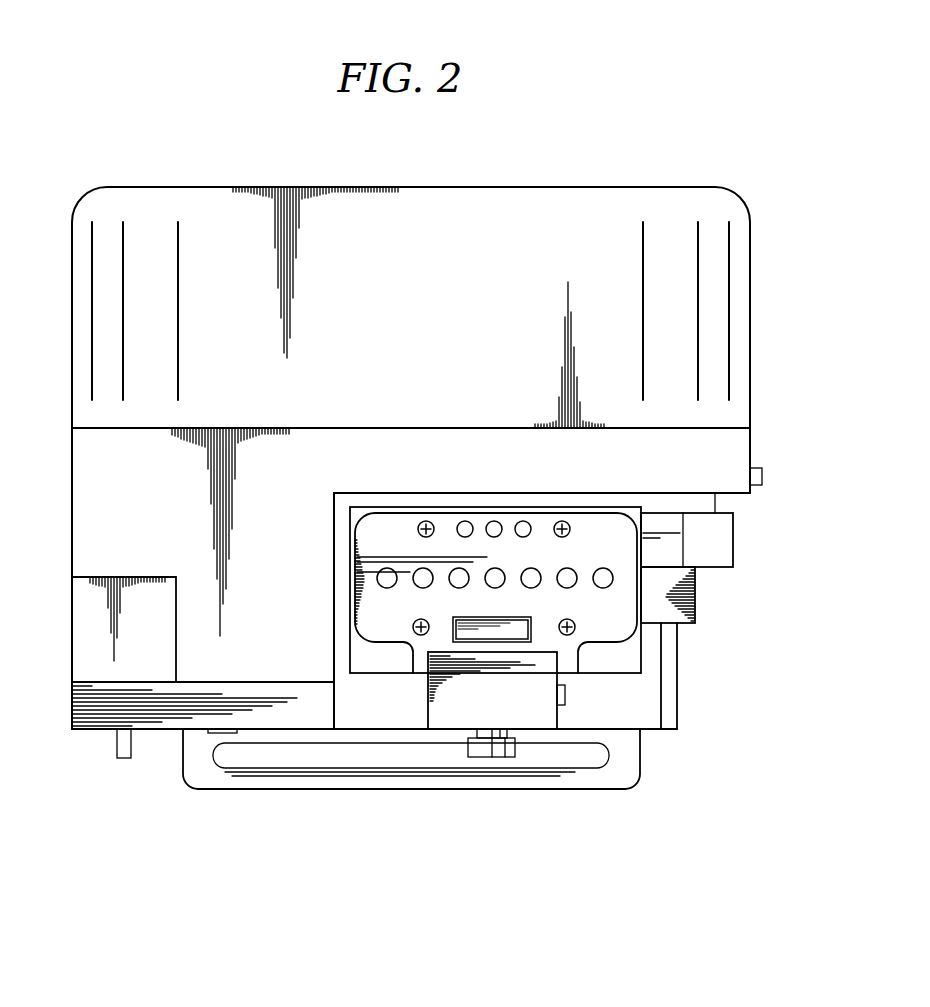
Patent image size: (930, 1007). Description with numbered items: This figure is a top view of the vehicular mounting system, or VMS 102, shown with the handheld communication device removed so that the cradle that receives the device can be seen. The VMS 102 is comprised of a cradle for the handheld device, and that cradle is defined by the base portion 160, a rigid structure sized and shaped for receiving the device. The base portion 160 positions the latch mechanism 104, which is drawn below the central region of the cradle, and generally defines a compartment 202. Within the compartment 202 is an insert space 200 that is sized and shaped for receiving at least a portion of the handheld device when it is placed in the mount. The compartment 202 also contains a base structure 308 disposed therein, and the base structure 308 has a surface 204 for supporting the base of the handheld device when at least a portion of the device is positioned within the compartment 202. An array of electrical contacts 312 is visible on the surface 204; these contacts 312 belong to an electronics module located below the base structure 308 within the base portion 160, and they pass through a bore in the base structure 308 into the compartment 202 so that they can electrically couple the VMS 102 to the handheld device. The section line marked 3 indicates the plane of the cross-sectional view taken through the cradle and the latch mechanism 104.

The vehicular mounting system 102 is at (738, 155).
The insert space 200 is at (596, 533).
The surface 204 is at (622, 553).
The electrical contacts 312 is at (456, 568).
The compartment 202 is at (619, 683).
The base structure 308 is at (630, 643).
The base portion 160 is at (368, 714).
The latch mechanism 104 is at (532, 729).
The section line for FIG. 3 is at (493, 487).